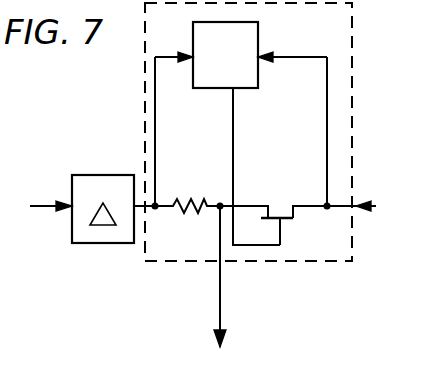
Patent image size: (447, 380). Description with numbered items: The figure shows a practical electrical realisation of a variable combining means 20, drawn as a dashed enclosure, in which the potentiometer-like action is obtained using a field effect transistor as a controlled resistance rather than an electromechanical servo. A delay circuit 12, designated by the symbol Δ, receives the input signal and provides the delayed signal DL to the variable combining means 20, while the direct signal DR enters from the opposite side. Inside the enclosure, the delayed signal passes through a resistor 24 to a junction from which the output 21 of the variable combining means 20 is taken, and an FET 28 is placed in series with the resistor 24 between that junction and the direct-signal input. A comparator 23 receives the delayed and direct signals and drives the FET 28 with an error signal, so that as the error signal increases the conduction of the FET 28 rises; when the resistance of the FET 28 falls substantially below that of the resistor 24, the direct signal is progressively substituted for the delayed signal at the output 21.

The variable combining means 20 is at (145, 40).
The delay circuit 12 is at (102, 244).
The comparator 23 is at (257, 87).
The resistor 24 is at (183, 197).
The FET 28 is at (295, 220).
The output 21 is at (222, 313).